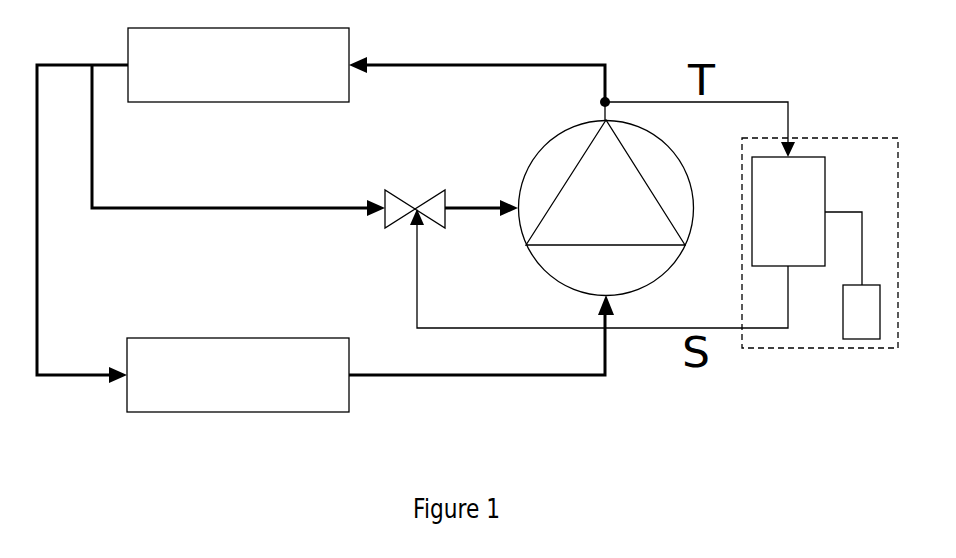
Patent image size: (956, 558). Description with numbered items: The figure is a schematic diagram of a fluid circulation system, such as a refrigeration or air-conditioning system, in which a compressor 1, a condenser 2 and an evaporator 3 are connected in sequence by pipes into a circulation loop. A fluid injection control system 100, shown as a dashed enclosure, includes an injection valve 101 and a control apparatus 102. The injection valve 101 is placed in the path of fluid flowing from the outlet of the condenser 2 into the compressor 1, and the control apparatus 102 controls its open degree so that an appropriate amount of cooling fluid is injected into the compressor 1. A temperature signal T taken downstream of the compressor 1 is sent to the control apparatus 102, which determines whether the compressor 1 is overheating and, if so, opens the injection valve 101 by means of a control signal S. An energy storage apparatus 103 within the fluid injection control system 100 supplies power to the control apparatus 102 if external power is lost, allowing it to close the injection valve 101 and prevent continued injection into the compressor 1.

The compressor 1 is at (606, 208).
The condenser 2 is at (238, 65).
The evaporator 3 is at (238, 375).
The fluid injection control system 100 is at (855, 130).
The injection valve 101 is at (415, 200).
The control apparatus 102 is at (788, 211).
The energy storage apparatus 103 is at (863, 340).